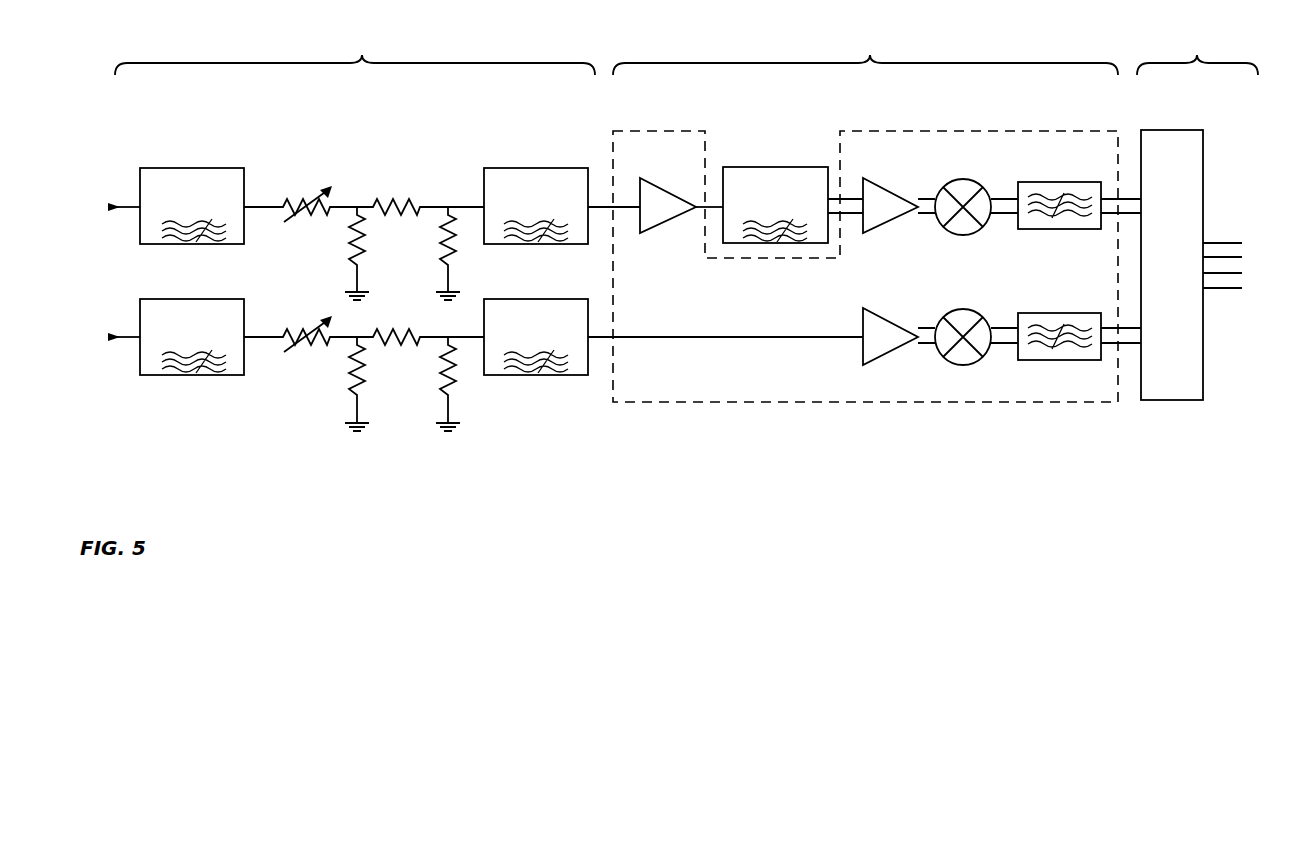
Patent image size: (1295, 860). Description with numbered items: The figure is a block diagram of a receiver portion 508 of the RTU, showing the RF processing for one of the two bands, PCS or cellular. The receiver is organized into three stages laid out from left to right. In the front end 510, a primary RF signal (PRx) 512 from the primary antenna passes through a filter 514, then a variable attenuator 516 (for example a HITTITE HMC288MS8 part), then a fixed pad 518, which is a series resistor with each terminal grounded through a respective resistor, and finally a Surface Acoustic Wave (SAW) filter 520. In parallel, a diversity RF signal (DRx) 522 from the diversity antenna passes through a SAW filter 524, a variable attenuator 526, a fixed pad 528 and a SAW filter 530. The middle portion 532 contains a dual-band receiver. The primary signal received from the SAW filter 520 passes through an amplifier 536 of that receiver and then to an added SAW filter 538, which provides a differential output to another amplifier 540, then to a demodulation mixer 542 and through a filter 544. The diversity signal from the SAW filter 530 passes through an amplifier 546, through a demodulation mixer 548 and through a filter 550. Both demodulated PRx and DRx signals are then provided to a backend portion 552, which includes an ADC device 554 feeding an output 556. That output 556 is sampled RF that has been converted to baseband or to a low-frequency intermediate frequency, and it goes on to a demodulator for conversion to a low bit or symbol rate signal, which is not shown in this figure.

The receiver portion 508 is at (739, 436).
The front end 510 is at (421, 55).
The primary RF signal (PRx) 512 is at (104, 218).
The filter 514 is at (232, 215).
The variable attenuator 516 is at (319, 184).
The fixed pad 518 is at (411, 180).
The Surface Acoustic Wave (SAW) filter 520 is at (578, 215).
The diversity RF signal (DRx) 522 is at (96, 348).
The SAW filter 524 is at (232, 346).
The variable attenuator 526 is at (304, 362).
The fixed pad 528 is at (402, 430).
The SAW filter 530 is at (578, 346).
The middle portion 532 is at (929, 55).
The amplifier 536 is at (680, 217).
The added SAW filter 538 is at (817, 215).
The amplifier 540 is at (903, 217).
The demodulation mixer 542 is at (968, 179).
The filter 544 is at (1059, 182).
The amplifier 546 is at (903, 347).
The demodulation mixer 548 is at (968, 309).
The filter 550 is at (1059, 313).
The backend portion 552 is at (1262, 55).
The ADC device 554 is at (1190, 299).
The output 556 is at (1231, 229).